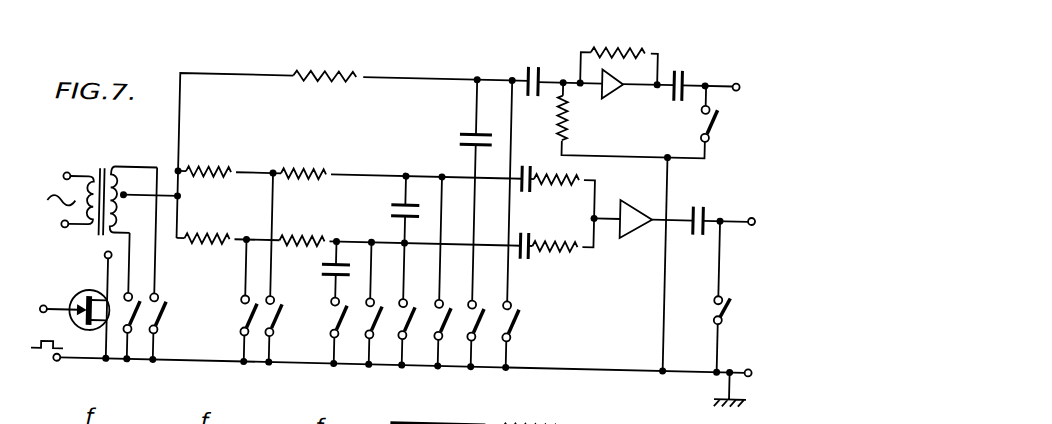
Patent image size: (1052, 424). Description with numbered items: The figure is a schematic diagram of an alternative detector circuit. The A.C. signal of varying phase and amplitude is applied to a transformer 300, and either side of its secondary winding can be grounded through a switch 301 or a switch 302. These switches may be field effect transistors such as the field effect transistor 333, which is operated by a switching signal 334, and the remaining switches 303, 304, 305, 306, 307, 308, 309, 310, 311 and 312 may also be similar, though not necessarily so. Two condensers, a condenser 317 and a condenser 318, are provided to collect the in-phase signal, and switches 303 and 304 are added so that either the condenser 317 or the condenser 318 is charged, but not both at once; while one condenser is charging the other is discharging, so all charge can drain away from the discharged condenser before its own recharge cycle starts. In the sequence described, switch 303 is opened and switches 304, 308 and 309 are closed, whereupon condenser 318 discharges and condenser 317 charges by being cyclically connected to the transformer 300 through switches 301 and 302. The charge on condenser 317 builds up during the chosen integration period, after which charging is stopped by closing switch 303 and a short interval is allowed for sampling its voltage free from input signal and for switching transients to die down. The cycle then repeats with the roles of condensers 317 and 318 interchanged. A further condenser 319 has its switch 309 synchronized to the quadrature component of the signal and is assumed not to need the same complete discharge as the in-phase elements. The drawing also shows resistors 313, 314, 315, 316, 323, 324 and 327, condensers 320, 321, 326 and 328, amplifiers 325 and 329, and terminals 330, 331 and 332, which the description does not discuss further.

The transformer 300 is at (98, 172).
The switch 301 is at (138, 331).
The switch 302 is at (165, 329).
The switch 303 is at (243, 340).
The switch 304 is at (282, 330).
The switch 305 is at (330, 319).
The switch 306 is at (376, 331).
The switch 307 is at (410, 333).
The switch 308 is at (446, 333).
The switch 309 is at (485, 340).
The switch 310 is at (515, 315).
The switch 311 is at (716, 292).
The switch 312 is at (714, 130).
The resistor 313 is at (217, 172).
The resistor 314 is at (210, 234).
The resistor 315 is at (314, 170).
The resistor 316 is at (305, 234).
The condenser 317 is at (321, 269).
The condenser 318 is at (392, 202).
The condenser 319 is at (466, 127).
The capacitor 320 is at (530, 182).
The capacitor 321 is at (529, 250).
The resistor 323 is at (585, 172).
The resistor 324 is at (568, 250).
The amplifier 325 is at (627, 221).
The coupling capacitor 326 is at (692, 202).
The resistor 327 is at (346, 73).
The capacitor 328 is at (524, 67).
The amplifier 329 is at (612, 90).
The output terminal 330 is at (733, 76).
The output terminal 331 is at (750, 210).
The ground terminal 332 is at (748, 362).
The field effect transistor 333 is at (82, 298).
The switching signal 334 is at (58, 366).